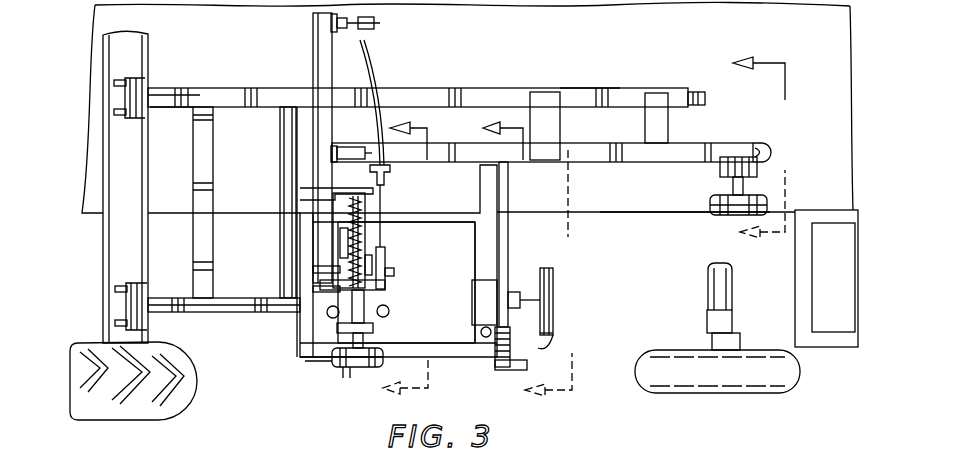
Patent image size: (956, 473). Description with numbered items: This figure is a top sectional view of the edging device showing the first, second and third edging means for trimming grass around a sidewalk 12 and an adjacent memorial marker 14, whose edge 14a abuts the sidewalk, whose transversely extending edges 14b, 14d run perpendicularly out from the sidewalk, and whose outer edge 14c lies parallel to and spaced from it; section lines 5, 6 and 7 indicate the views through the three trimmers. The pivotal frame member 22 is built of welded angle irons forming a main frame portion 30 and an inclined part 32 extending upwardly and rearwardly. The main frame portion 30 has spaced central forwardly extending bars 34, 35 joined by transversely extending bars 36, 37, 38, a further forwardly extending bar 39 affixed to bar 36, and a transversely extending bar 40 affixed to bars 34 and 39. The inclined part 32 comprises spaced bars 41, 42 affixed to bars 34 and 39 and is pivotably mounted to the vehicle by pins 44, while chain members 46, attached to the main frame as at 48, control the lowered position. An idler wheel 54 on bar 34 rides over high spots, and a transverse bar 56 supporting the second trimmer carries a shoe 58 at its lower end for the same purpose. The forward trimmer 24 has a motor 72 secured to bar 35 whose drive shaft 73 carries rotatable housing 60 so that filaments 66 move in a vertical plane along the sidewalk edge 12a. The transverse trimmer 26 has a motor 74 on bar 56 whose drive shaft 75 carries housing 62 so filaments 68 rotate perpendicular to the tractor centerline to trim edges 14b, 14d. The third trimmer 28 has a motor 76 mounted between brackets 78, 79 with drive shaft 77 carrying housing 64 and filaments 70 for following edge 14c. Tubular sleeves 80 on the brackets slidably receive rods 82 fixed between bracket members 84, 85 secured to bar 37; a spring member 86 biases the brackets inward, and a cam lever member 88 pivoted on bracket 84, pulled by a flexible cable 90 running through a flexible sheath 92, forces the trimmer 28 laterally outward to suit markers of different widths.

The sidewalk 12 is at (636, 195).
The edge of the sidewalk 12a is at (640, 216).
The memorial marker 14 is at (456, 255).
The side or edge of the memorial marker 14a is at (437, 213).
The transversely extending edge of the memorial marker 14b is at (300, 322).
The outer edge of the memorial marker 14c is at (460, 356).
The transversely extending edge of the memorial marker 14d is at (497, 236).
The pivotal frame member 22 is at (582, 75).
The forward trimmer 24 is at (768, 197).
The transverse trimmer 26 is at (554, 332).
The third trimmer 28 is at (348, 392).
The main frame portion 30 is at (427, 80).
The inclined part 32 is at (172, 84).
The forwardly extending support bar 34 is at (232, 87).
The forwardly extending support bar 35 is at (435, 143).
The transversely extending bar 36 is at (283, 232).
The transversely extending bar 37 is at (313, 64).
The transversely extending bar 38 is at (663, 122).
The forwardly extending bar 39 is at (229, 297).
The transversely extending bar 40 is at (213, 189).
The inclined bar 41 is at (178, 109).
The inclined bar 42 is at (165, 297).
The pin 44 is at (131, 122).
The chain member 46 is at (380, 23).
The chain attachment point 48 is at (313, 22).
The idler wheel 54 is at (695, 88).
The transverse bar 56 is at (508, 262).
The shoe 58 is at (506, 368).
The rotatable head or housing 60 is at (716, 199).
The rotatable housing 62 is at (552, 272).
The rotatable housing 64 is at (343, 380).
The flexible flailing elements 66 is at (692, 214).
The flexible flailing elements 68 is at (550, 350).
The flexible flailing elements 70 is at (384, 352).
The motor 72 is at (775, 128).
The drive shaft 73 is at (762, 178).
The motor 74 is at (472, 300).
The drive shaft 75 is at (515, 291).
The motor 76 is at (376, 300).
The drive shaft 77 is at (320, 358).
The transversely extending bracket 78 is at (372, 328).
The transversely extending bracket 79 is at (313, 289).
The tubular sleeve 80 is at (320, 340).
The transversely extending rod 82 is at (370, 258).
The bracket member 84 is at (333, 270).
The bracket member 85 is at (300, 193).
The spring member 86 is at (366, 240).
The cam lever member 88 is at (343, 243).
The flexible cable 90 is at (384, 197).
The flexible sheath 92 is at (377, 54).
The section line 5- 5 is at (749, 150).
The section line 6- 6 is at (392, 257).
The section line 7- 7 is at (520, 257).